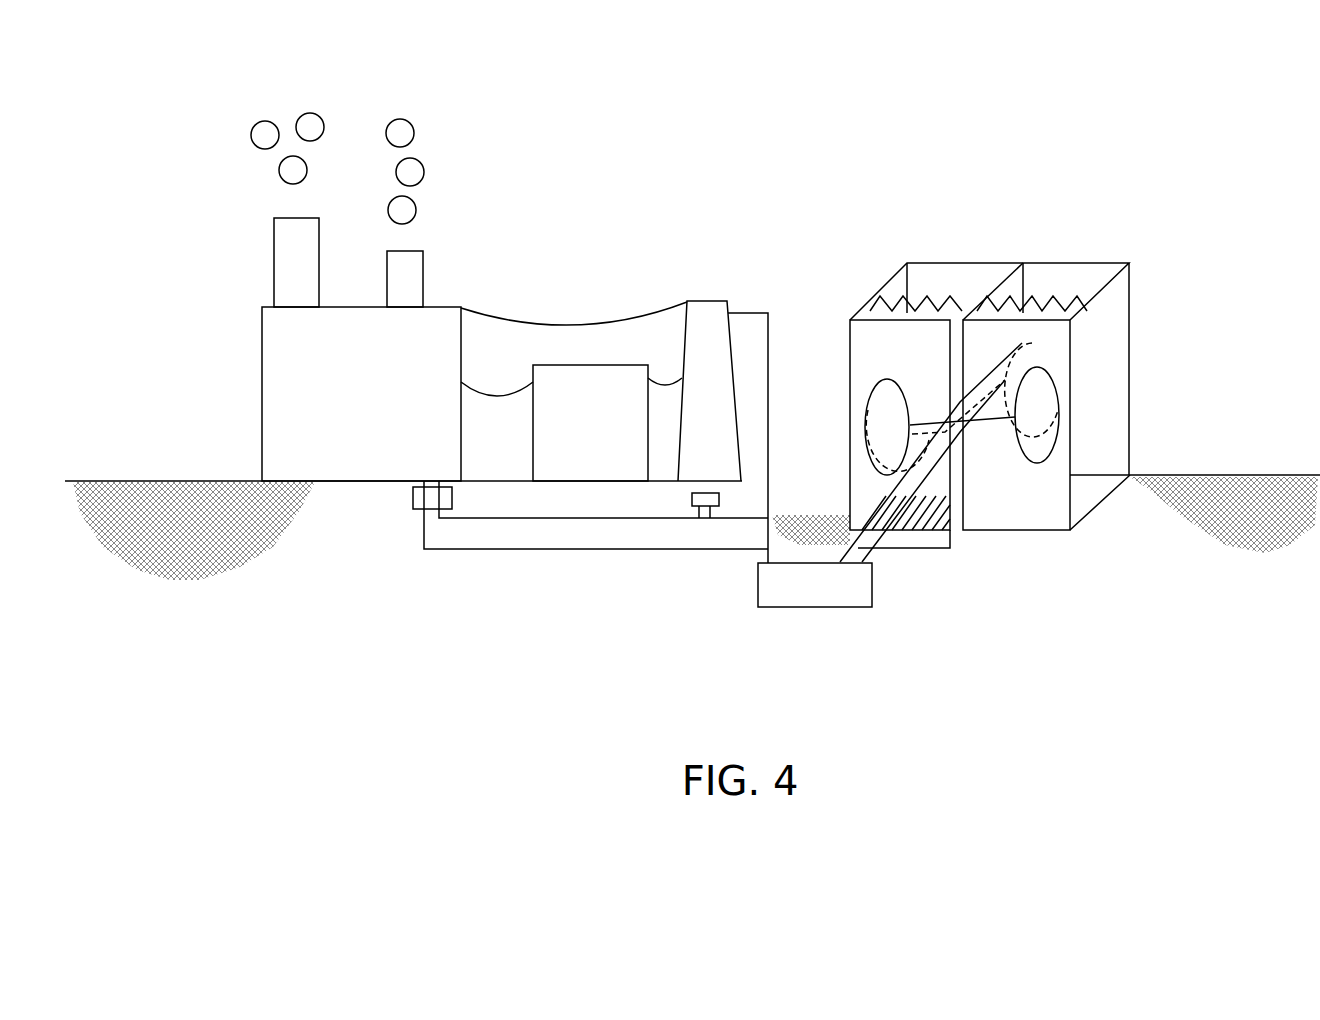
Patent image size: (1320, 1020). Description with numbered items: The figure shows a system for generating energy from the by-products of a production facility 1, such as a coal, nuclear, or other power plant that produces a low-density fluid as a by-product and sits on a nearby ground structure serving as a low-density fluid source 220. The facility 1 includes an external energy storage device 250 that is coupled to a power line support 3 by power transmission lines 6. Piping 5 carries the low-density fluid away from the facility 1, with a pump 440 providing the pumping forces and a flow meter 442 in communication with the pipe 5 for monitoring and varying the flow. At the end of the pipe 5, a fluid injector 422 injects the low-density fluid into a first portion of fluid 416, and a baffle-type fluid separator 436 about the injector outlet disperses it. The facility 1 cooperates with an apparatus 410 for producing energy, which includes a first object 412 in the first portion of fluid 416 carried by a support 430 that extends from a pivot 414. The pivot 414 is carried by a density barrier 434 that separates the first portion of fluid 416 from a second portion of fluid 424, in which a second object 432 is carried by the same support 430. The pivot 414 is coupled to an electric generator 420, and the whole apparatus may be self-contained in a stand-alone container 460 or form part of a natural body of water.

The production facility 1 is at (273, 378).
The power line support 3 is at (705, 313).
The piping 5 is at (489, 530).
The power transmission lines 6 is at (510, 393).
The low-density fluid source 220 is at (284, 586).
The external energy storage device 250 is at (602, 382).
The apparatus for producing energy 410 is at (1098, 550).
The first object 412 is at (882, 398).
The pivot 414 is at (955, 418).
The first portion of fluid 416 is at (950, 320).
The electric generator 420 is at (800, 588).
The fluid injector 422 is at (915, 540).
The second portion of fluid 424 is at (1057, 297).
The support 430 is at (923, 427).
The second object 432 is at (1043, 445).
The density barrier 434 is at (1013, 267).
The fluid separator 436 is at (933, 525).
The pump 440 is at (410, 503).
The flow meter 442 is at (696, 499).
The stand-alone container 460 is at (902, 255).